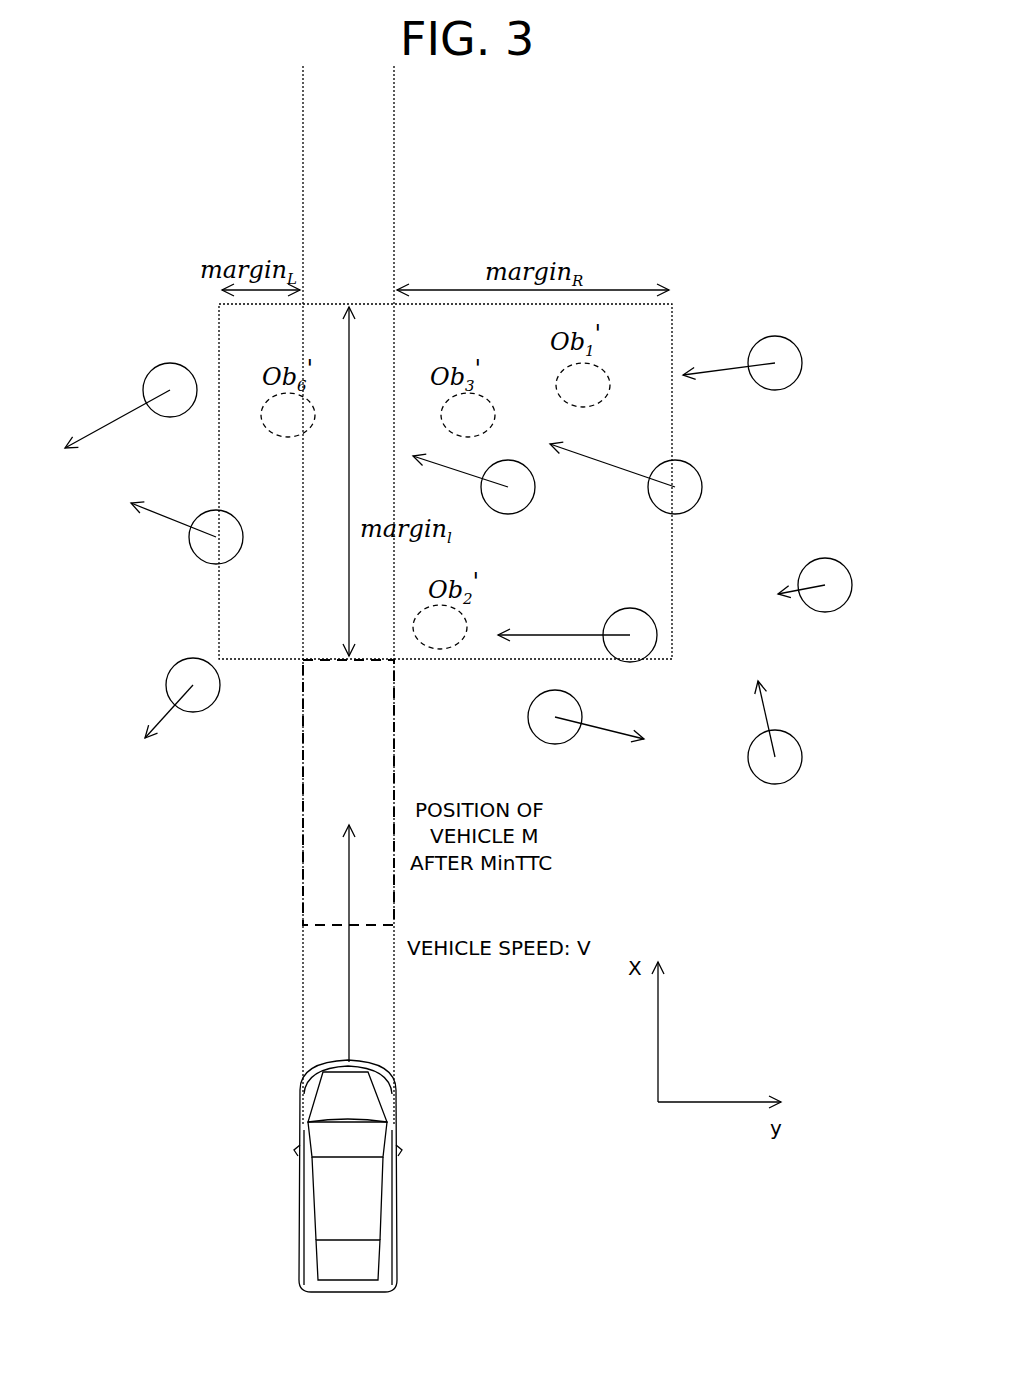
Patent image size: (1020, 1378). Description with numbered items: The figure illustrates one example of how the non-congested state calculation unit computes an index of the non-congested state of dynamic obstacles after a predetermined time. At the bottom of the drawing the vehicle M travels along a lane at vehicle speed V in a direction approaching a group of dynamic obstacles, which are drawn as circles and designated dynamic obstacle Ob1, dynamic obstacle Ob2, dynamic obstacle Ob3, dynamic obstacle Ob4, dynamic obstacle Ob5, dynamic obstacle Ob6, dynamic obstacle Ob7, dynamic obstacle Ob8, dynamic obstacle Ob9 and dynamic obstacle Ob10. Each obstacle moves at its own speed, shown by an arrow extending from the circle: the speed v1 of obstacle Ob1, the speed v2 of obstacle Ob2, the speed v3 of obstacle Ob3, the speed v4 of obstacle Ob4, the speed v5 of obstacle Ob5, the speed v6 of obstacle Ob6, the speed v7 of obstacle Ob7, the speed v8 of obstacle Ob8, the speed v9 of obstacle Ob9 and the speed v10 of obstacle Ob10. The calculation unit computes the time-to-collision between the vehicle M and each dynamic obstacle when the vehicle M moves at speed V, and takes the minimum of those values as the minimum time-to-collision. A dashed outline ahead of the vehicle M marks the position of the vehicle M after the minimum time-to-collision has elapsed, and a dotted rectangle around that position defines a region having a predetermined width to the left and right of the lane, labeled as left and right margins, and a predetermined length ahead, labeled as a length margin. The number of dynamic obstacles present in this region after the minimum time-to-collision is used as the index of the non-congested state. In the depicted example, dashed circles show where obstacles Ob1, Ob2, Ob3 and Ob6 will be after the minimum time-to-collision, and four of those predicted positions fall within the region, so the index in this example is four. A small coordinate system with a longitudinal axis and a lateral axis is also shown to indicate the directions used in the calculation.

The vehicle M is at (407, 1176).
The dynamic obstacle Ob1 is at (785, 353).
The dynamic obstacle Ob2 is at (635, 626).
The dynamic obstacle Ob3 is at (691, 478).
The dynamic obstacle Ob4 is at (833, 604).
The dynamic obstacle Ob5 is at (785, 776).
The dynamic obstacle Ob6 is at (518, 505).
The dynamic obstacle Ob7 is at (563, 714).
The dynamic obstacle Ob8 is at (187, 704).
The dynamic obstacle Ob9 is at (221, 526).
The dynamic obstacle Ob10 is at (180, 381).
The speed of dynamic obstacle v1 is at (715, 376).
The speed of dynamic obstacle v2 is at (564, 624).
The speed of dynamic obstacle v3 is at (612, 460).
The speed of dynamic obstacle v4 is at (781, 576).
The speed of dynamic obstacle v5 is at (745, 719).
The speed of dynamic obstacle v6 is at (440, 456).
The speed of dynamic obstacle v7 is at (438, 666).
The speed of dynamic obstacle v8 is at (146, 711).
The speed of dynamic obstacle v9 is at (173, 517).
The speed of dynamic obstacle v10 is at (117, 418).